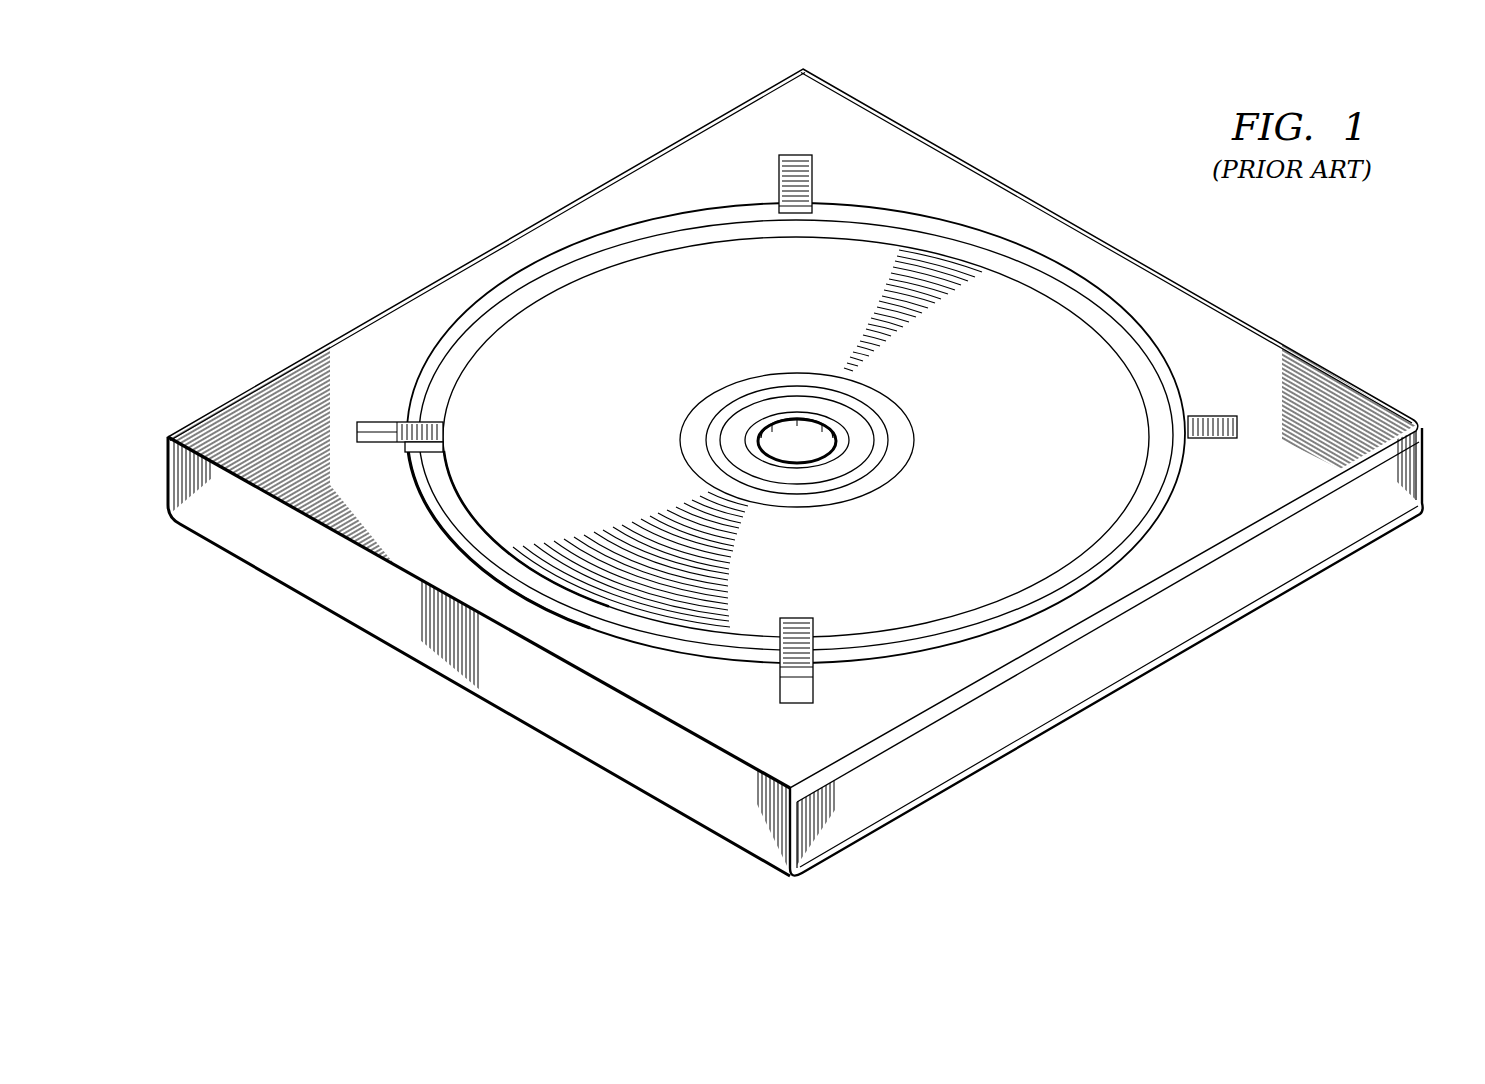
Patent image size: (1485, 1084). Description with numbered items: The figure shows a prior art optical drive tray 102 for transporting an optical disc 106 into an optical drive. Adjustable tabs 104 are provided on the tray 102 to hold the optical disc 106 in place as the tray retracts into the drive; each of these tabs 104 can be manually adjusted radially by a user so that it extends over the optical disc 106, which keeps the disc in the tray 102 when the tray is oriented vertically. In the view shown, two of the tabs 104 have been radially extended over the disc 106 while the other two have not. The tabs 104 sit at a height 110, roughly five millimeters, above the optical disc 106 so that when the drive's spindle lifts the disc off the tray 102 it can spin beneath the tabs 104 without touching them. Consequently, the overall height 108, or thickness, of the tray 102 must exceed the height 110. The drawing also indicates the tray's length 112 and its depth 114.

The tray 102 is at (438, 230).
The adjustable tabs 104 is at (812, 170).
The optical disc 106 is at (690, 262).
The height of the tray 108 is at (1456, 427).
The height 110 is at (475, 422).
The length of the tray 112 is at (1447, 405).
The depth of the tray 114 is at (1450, 530).